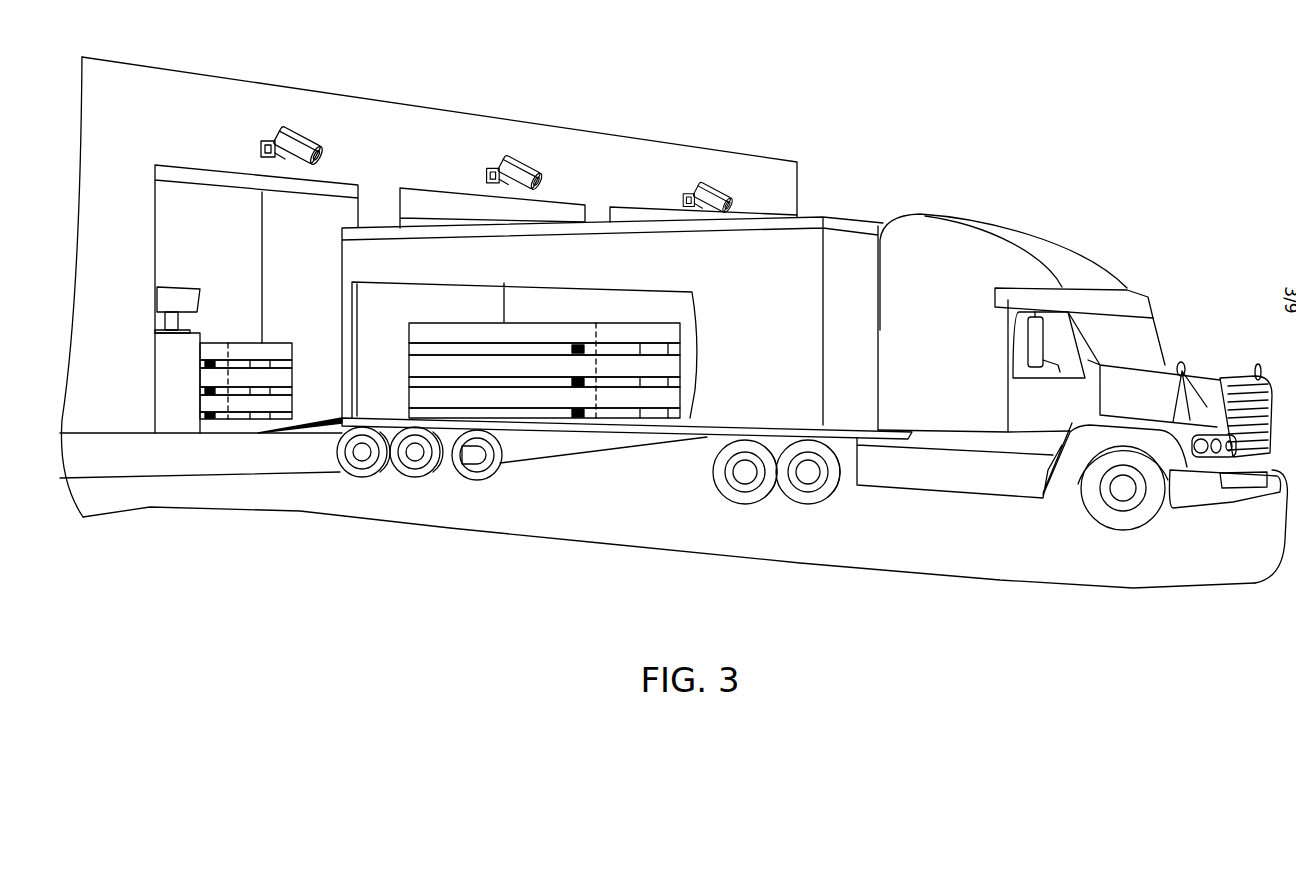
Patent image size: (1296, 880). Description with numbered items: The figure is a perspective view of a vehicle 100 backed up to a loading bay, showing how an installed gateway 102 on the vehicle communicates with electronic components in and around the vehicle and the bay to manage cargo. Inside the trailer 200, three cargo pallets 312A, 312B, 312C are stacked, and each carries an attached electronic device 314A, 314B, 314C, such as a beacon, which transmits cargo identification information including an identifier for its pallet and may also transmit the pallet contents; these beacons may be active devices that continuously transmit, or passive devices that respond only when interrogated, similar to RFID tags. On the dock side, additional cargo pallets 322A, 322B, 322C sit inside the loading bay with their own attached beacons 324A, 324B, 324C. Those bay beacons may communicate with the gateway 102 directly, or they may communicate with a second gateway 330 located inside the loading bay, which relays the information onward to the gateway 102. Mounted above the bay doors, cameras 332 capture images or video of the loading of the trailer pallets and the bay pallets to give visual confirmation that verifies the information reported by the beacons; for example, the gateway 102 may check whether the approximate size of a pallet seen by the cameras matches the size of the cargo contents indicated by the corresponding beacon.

The truck tractor 100 is at (1055, 240).
The gateway 102 is at (1135, 330).
The trailer 200 is at (860, 220).
The cargo pallet 312A is at (409, 335).
The cargo pallet 312B is at (409, 358).
The cargo pallet 312C is at (409, 395).
The electronic device 314A is at (585, 345).
The electronic device 314B is at (585, 382).
The electronic device 314C is at (585, 420).
The cargo pallet 322A is at (262, 352).
The cargo pallet 322B is at (250, 377).
The cargo pallet 322C is at (250, 405).
The beacon 324A is at (205, 365).
The beacon 324B is at (205, 391).
The beacon 324C is at (205, 416).
The second gateway 330 is at (162, 300).
The cameras 332 is at (307, 147).